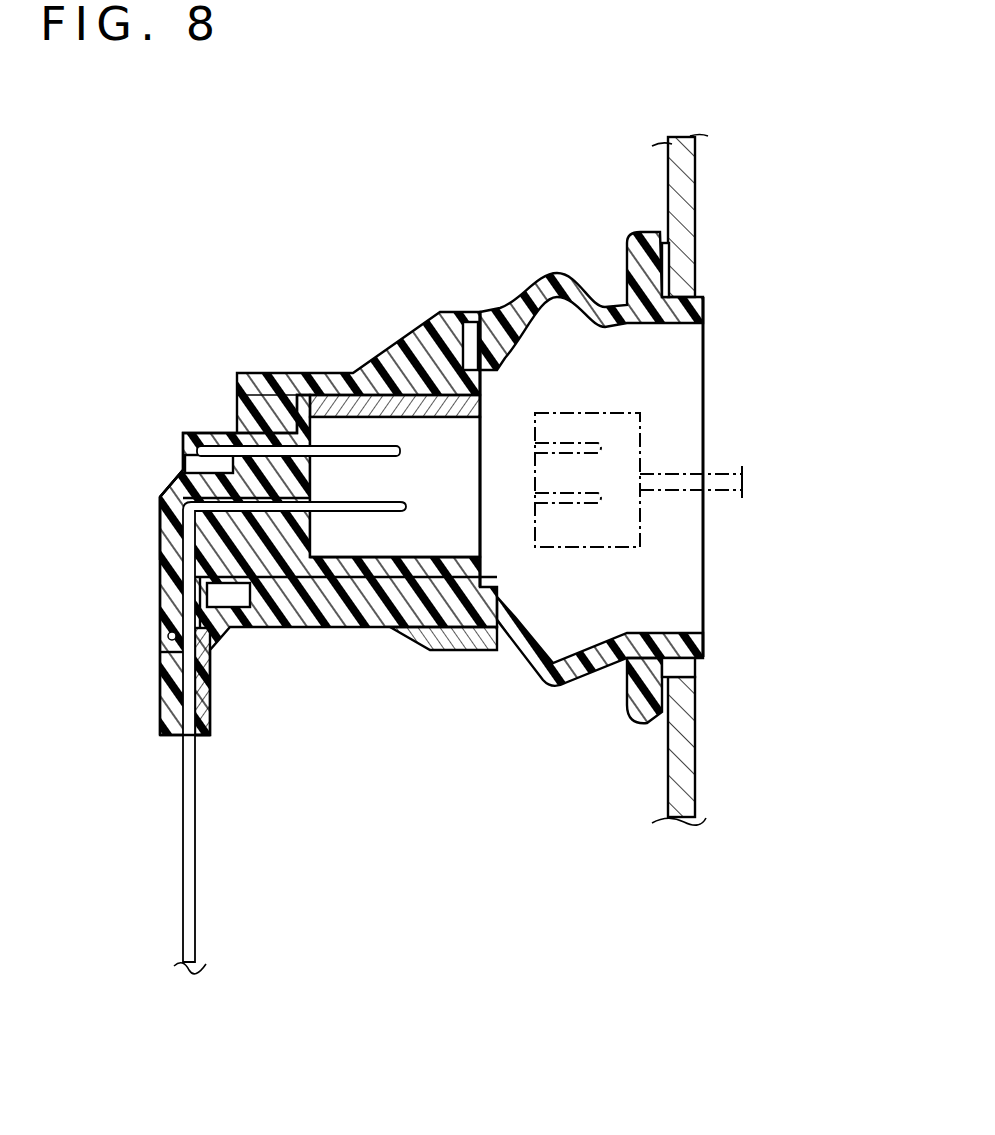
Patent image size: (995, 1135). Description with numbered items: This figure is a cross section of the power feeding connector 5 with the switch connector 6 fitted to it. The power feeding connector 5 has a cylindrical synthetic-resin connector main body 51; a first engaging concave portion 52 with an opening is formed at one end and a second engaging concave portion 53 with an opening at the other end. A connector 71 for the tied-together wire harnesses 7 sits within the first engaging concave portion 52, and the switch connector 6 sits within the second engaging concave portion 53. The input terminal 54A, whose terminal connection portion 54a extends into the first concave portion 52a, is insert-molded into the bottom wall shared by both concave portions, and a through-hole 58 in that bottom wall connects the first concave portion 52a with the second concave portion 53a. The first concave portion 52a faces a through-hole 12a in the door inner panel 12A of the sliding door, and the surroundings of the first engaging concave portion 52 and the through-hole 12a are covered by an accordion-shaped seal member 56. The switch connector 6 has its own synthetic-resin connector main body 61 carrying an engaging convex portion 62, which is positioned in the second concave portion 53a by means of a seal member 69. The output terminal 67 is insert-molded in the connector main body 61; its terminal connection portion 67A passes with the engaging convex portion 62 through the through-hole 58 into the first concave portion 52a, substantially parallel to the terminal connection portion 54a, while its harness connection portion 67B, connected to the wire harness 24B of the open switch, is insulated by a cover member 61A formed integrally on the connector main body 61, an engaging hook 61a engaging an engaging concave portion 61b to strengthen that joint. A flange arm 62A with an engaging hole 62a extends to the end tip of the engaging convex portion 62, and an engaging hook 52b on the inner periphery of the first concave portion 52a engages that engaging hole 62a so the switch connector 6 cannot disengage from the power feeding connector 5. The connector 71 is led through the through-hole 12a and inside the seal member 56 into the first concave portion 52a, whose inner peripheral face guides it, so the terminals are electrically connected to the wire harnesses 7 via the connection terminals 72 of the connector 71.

The power feeding connector 5 is at (475, 280).
The switch connector 6 is at (145, 427).
The wire harnesses 7 is at (722, 492).
The door inner panel 12A is at (696, 214).
The through-hole 12a is at (695, 292).
The wire harness 24B is at (193, 870).
The connector main body 51 is at (330, 378).
The first engaging concave portion 52 is at (480, 397).
The first concave portion 52a is at (435, 343).
The engaging hook 52b is at (400, 553).
The second engaging concave portion 53 is at (187, 603).
The second concave portion 53a is at (240, 560).
The input terminal 54A is at (280, 395).
The terminal connection portion 54a is at (353, 447).
The seal member 56 is at (547, 678).
The through-hole 58 is at (440, 453).
The connector main body 61 is at (157, 558).
The engaging hook 61a is at (168, 630).
The cover member 61A is at (160, 733).
The engaging concave portion 61b is at (188, 660).
The engaging convex portion 62 is at (285, 605).
The engaging hole 62a is at (387, 617).
The flange arm 62A is at (433, 633).
The output terminal 67 is at (163, 533).
The terminal connection portion 67A is at (395, 487).
The harness connection portion 67B is at (173, 652).
The seal member 69 is at (218, 438).
The connector 71 is at (633, 425).
The connection terminals 72 is at (593, 505).